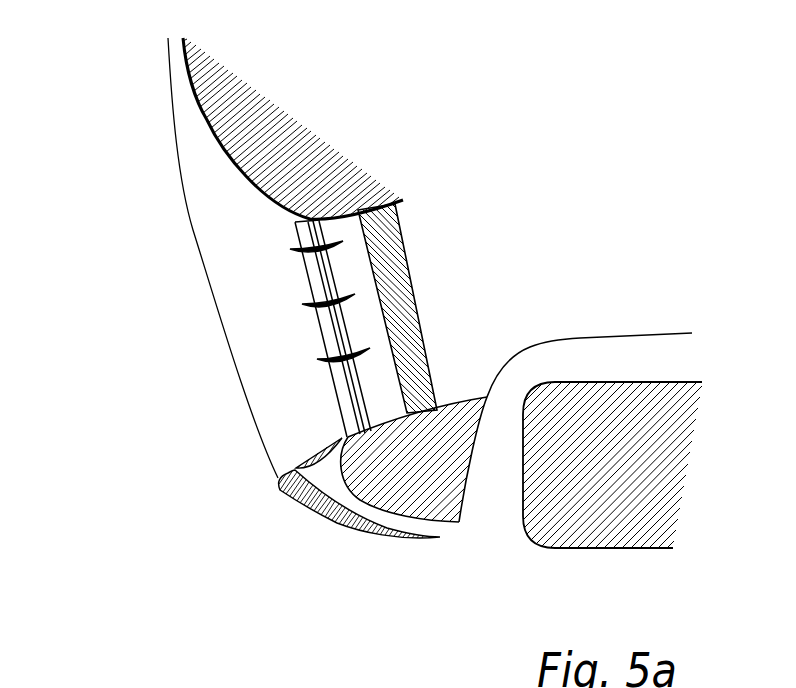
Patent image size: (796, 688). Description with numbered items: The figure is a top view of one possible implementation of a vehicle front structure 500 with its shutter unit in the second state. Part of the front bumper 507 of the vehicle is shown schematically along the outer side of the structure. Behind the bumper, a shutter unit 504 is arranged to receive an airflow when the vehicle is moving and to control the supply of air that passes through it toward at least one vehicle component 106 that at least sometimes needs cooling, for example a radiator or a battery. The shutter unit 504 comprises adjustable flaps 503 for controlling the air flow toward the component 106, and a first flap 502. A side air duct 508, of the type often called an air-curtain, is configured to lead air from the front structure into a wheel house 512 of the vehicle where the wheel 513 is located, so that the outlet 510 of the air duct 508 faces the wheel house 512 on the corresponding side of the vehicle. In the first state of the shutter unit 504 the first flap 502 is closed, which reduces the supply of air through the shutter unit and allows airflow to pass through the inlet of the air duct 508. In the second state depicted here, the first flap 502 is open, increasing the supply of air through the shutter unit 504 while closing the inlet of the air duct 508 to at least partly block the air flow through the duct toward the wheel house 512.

The vehicle front structure 500 is at (154, 319).
The vehicle component 106 is at (395, 292).
The first flap 502 is at (303, 455).
The adjustable flaps 503 is at (318, 314).
The shutter unit 504 is at (272, 376).
The front bumper 507 is at (177, 150).
The side air duct 508 is at (363, 508).
The outlet 510 is at (440, 528).
The wheel house 512 is at (515, 502).
The wheel 513 is at (613, 537).